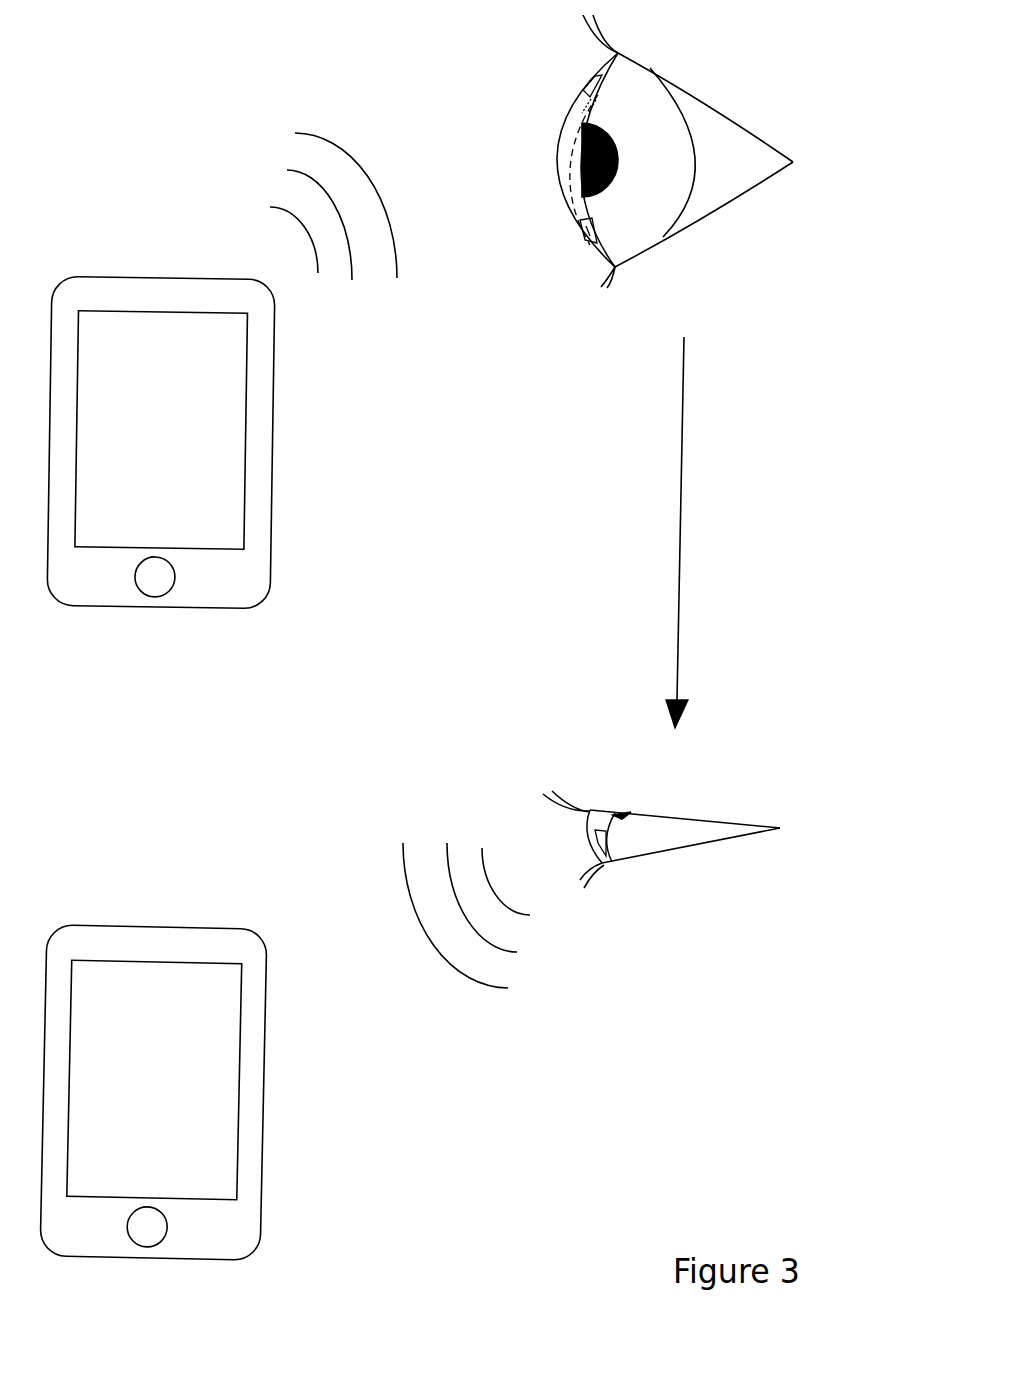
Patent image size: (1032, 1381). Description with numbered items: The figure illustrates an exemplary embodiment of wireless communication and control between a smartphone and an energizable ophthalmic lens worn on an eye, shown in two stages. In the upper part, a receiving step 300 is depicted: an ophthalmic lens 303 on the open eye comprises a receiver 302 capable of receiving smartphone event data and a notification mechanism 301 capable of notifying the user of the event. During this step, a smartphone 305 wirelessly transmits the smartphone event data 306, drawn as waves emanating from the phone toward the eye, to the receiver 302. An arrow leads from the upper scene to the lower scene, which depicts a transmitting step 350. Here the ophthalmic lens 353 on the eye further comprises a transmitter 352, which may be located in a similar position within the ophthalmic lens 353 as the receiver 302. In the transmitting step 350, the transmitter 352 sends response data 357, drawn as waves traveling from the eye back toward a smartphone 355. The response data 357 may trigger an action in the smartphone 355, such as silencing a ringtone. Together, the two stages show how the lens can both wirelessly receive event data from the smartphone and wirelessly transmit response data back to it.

The receiving step 300 is at (420, 322).
The notification mechanism 301 is at (583, 82).
The receiver 302 is at (587, 223).
The ophthalmic lens 303 is at (597, 248).
The smartphone 305 is at (258, 457).
The smartphone event data 306 is at (290, 187).
The transmitting step 350 is at (410, 1026).
The transmitter 352 is at (592, 840).
The ophthalmic lens 353 is at (590, 818).
The smartphone 355 is at (252, 1137).
The response data 357 is at (435, 855).